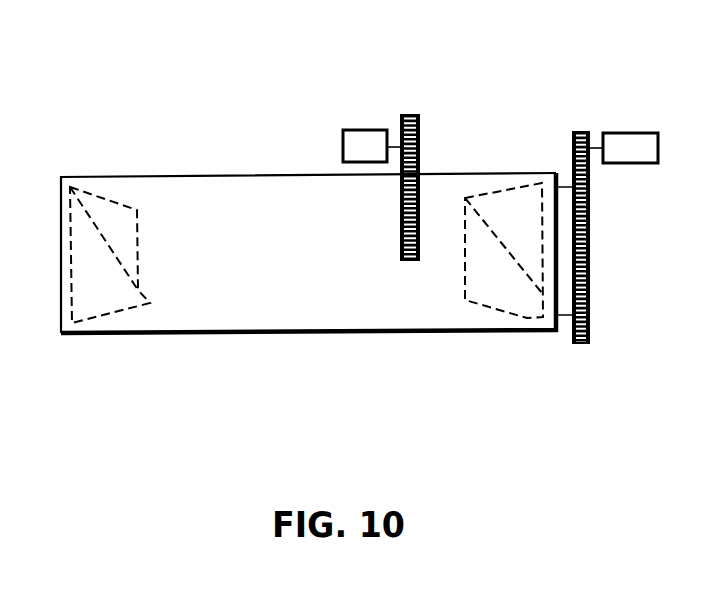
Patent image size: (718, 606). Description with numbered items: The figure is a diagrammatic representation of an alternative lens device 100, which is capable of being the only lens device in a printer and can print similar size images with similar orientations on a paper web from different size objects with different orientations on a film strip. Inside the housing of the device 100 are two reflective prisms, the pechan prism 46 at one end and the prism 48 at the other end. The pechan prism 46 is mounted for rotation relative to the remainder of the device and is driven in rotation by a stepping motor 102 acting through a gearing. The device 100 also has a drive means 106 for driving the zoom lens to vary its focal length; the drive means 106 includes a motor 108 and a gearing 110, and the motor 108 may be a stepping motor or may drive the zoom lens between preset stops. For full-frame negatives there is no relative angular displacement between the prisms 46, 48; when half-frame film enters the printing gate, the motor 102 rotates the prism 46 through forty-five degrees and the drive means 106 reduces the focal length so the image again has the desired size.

The device 100 is at (327, 347).
The prism 48 is at (93, 296).
The pechan prism 46 is at (495, 282).
The gearing 110 is at (428, 154).
The motor 108 is at (365, 130).
The drive means 106 is at (438, 73).
The stepping motor 102 is at (633, 145).